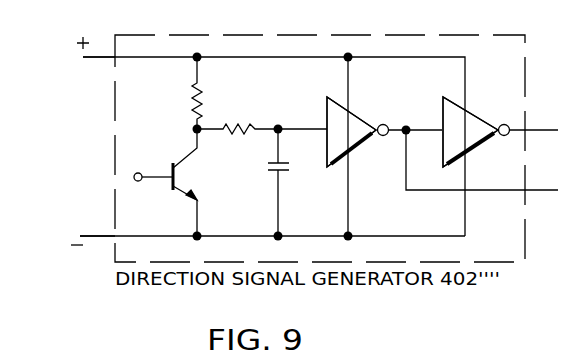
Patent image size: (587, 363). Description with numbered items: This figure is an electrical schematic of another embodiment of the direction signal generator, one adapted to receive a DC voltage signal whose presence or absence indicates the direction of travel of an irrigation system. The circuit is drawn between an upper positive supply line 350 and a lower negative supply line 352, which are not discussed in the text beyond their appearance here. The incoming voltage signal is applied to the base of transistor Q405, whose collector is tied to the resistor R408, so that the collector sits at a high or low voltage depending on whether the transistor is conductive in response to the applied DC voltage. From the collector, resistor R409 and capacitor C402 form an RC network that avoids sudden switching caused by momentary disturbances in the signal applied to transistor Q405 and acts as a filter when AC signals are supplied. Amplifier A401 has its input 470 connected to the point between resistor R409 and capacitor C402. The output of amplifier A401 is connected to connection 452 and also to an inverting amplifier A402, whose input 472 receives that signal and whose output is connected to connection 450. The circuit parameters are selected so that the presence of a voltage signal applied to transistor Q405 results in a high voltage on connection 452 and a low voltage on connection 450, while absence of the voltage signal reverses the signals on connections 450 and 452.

The positive supply input line 350 is at (103, 58).
The negative supply input line 352 is at (103, 233).
The input 470 is at (326, 127).
The inverting amplifier A402 472 is at (441, 128).
The connection 450 is at (536, 129).
The connection 452 is at (535, 192).
The resistor R408 is at (214, 93).
The resistor R409 is at (262, 140).
The capacitor C402 is at (262, 182).
The transistor Q405 is at (176, 182).
The amplifier A401 is at (364, 139).
The inverting amplifier A402 is at (480, 139).